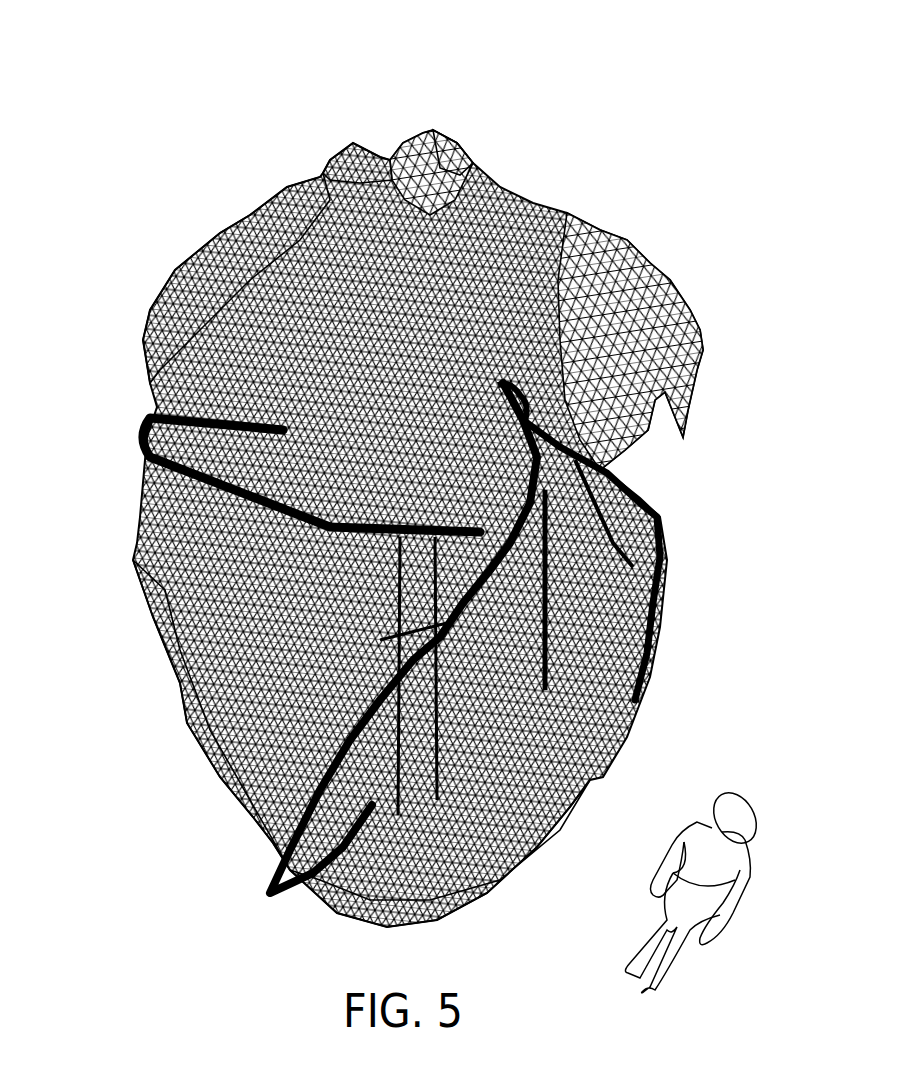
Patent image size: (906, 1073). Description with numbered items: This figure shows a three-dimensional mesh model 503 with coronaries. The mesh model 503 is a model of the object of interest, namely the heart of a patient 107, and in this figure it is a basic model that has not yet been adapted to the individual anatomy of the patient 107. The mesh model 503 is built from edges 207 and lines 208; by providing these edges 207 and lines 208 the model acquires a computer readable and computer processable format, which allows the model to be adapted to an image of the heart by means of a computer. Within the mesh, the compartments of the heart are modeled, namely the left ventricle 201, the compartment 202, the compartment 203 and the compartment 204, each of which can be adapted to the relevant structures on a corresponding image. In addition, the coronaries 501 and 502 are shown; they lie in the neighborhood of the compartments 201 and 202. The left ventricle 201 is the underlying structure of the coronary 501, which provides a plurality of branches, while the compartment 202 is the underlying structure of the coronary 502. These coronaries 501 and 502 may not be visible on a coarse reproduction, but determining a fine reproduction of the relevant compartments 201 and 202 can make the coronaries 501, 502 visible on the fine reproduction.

The patient 107 is at (753, 865).
The left ventricle 201 is at (497, 877).
The compartment 202 is at (187, 723).
The compartment 203 is at (590, 233).
The compartment 204 is at (237, 223).
The edges 207 is at (347, 143).
The lines 208 is at (404, 142).
The coronary 501 is at (263, 874).
The coronary 502 is at (143, 440).
The mesh model 503 is at (110, 331).